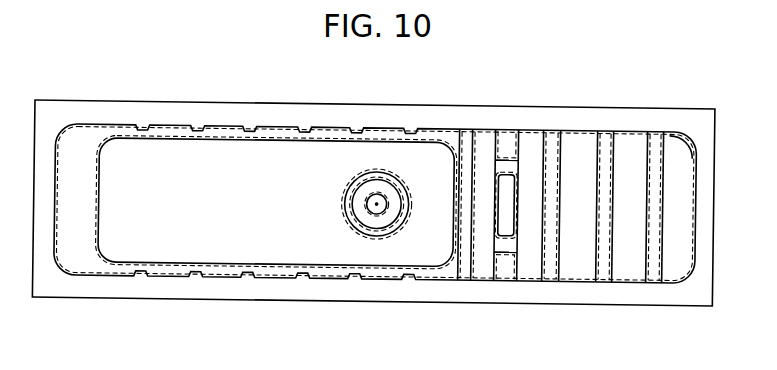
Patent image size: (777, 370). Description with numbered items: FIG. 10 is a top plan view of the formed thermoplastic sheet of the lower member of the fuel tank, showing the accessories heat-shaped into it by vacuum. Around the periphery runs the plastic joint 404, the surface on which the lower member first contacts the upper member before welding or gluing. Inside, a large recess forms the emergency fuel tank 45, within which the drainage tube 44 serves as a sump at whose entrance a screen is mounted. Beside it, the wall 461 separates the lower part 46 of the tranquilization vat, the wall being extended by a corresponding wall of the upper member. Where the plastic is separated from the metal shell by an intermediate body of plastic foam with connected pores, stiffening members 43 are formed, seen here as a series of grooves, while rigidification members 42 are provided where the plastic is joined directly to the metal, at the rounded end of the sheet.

The plastic joint 404 is at (698, 113).
The emergency fuel tank 45 is at (234, 159).
The drainage tube 44 is at (363, 191).
The wall 461 is at (504, 210).
The stiffening members 43 is at (655, 262).
The lower part of the tranquilization vat 46 is at (629, 144).
The rigidification members 42 is at (680, 126).